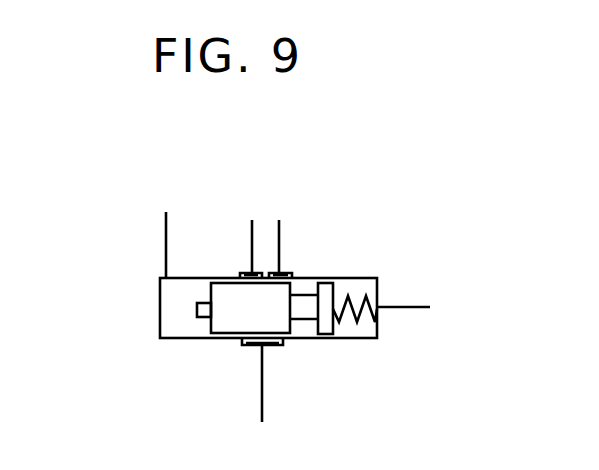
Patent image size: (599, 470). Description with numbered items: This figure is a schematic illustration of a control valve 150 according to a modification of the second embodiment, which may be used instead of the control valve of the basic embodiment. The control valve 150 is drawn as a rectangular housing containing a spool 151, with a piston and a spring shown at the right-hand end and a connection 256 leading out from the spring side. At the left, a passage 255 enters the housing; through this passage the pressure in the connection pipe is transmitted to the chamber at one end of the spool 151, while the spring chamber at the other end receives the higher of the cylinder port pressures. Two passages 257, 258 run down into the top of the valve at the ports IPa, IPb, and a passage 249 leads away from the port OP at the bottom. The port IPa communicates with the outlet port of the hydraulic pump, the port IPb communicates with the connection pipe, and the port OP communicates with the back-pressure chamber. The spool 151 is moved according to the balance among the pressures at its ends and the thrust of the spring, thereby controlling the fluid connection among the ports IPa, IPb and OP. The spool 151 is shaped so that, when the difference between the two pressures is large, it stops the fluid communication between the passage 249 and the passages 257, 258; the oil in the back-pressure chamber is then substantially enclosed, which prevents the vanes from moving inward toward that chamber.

The control valve 150 is at (166, 349).
The spool 151 is at (231, 320).
The passage 255 is at (166, 233).
The passage 257 is at (252, 229).
The passage 258 is at (279, 230).
The spring-side pressure passage 256 is at (420, 307).
The passage 249 is at (263, 400).
The port IPa is at (250, 273).
The port IPb is at (281, 273).
The port OP is at (263, 348).